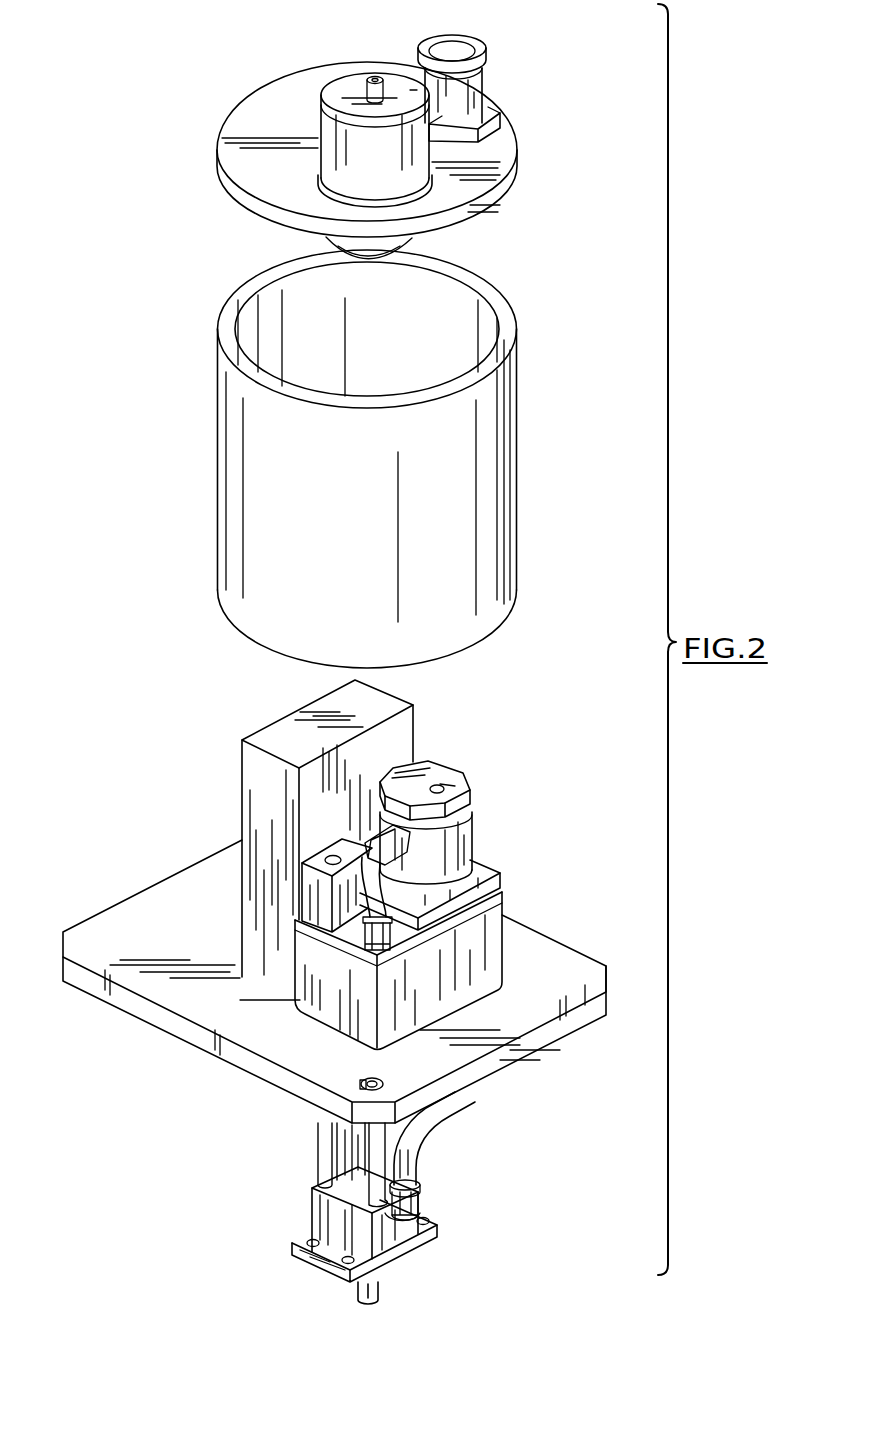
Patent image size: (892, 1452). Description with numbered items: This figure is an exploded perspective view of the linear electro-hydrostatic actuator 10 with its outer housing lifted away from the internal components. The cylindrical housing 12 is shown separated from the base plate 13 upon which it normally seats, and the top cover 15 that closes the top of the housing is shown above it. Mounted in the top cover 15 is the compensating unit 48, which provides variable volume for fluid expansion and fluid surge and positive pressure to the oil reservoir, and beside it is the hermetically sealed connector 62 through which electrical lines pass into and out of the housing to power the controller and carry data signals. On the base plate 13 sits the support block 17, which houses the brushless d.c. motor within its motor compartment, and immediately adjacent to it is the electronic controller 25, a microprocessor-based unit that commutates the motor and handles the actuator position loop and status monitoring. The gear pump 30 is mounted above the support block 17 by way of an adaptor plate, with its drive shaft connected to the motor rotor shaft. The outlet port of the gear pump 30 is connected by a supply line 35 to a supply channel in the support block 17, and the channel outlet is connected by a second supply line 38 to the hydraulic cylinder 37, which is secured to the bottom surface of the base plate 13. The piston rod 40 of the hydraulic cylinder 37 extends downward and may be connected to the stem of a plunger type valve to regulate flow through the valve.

The linear electro-hydrostatic actuator 10 is at (508, 750).
The cylindrical housing 12 is at (212, 478).
The base plate 13 is at (166, 1037).
The top cover 15 is at (488, 163).
The support block 17 is at (503, 940).
The electronic controller 25 is at (416, 719).
The gear pump 30 is at (474, 823).
The supply line 35 is at (364, 868).
The hydraulic cylinder 37 is at (318, 1148).
The second supply line 38 is at (437, 1117).
The piston rod 40 is at (388, 1282).
The compensating unit 48 is at (319, 114).
The hermetically sealed connector 62 is at (485, 83).